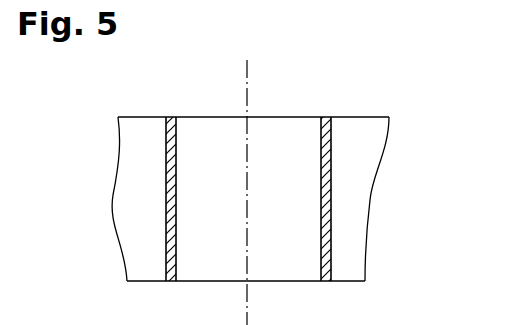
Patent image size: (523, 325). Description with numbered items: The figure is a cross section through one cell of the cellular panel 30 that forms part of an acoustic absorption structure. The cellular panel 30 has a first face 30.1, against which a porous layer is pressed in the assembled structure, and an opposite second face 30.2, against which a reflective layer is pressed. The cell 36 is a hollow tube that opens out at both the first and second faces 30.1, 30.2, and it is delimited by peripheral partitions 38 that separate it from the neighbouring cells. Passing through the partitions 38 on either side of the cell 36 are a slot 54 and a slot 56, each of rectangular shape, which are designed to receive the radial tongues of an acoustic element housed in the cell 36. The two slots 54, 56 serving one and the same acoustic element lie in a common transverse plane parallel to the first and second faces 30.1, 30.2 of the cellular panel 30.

The cellular panel 30 is at (278, 188).
The first face 30.1 is at (296, 117).
The second face 30.2 is at (342, 282).
The cell 36 is at (214, 145).
The partition 38 is at (244, 199).
The slot 54 is at (176, 154).
The slot 56 is at (321, 158).